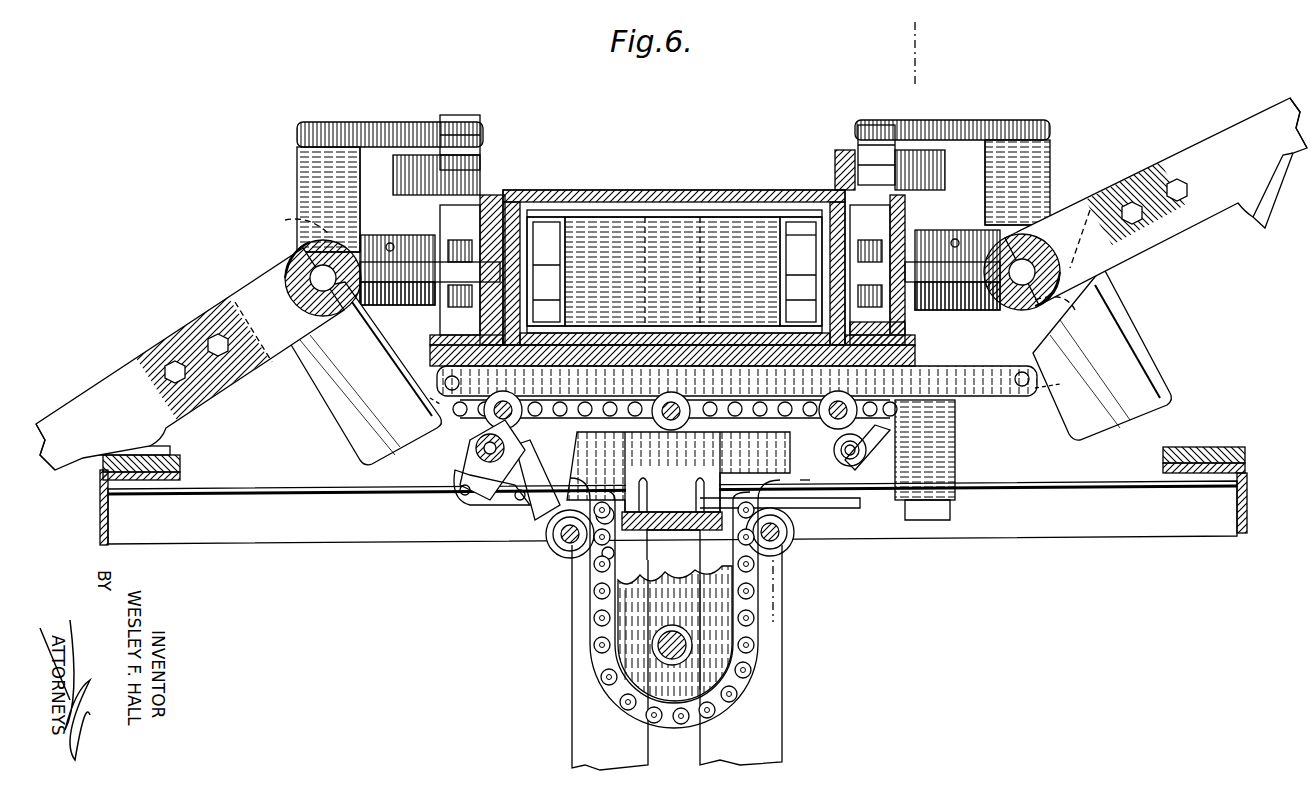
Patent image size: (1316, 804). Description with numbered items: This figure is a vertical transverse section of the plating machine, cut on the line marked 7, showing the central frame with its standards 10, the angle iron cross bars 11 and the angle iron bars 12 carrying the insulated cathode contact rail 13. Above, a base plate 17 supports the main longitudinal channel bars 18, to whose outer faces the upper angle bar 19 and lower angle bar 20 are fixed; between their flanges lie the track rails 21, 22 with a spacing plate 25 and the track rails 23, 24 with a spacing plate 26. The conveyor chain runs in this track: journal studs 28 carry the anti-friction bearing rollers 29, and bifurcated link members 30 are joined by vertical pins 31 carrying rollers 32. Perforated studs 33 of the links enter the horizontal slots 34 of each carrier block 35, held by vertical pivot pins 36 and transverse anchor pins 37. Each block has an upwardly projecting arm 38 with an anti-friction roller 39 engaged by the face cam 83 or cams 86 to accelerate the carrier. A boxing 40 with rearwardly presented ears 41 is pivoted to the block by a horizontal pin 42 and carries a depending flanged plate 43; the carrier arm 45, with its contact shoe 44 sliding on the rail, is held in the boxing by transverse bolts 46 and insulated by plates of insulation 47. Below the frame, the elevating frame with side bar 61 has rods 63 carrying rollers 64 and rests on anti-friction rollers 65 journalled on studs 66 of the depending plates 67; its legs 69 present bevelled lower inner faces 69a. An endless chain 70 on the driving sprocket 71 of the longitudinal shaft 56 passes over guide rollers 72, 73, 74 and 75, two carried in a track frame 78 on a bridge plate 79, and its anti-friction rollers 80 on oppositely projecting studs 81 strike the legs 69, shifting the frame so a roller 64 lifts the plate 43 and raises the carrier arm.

The section line 6—6 / Figure 7 reference 7 is at (911, 49).
The standards 10 is at (768, 714).
The angle iron cross bars 11 is at (290, 543).
The angle iron bars 12 is at (100, 494).
The cathode contact rail 13 is at (182, 463).
The base plate 17 is at (655, 356).
The main longitudinal channel bars 18 is at (600, 274).
The upper angle bar 19 is at (545, 200).
The lower angle bar 20 is at (437, 375).
The track rail 21 is at (801, 229).
The track rail 22 is at (895, 232).
The track rail 23 is at (770, 323).
The track rail 24 is at (905, 333).
The spacing plate 25 is at (880, 205).
The spacing plate 26 is at (915, 340).
The journal studs 28 is at (465, 322).
The anti-friction bearing rollers 29 is at (674, 271).
The bifurcated link members 30 is at (610, 230).
The vertical pins 31 is at (673, 282).
The anti-friction rollers 32 is at (673, 309).
The perforated studs 33 is at (680, 273).
The horizontal slots 34 is at (675, 295).
The carrier block 35 is at (292, 253).
The vertical pivot pins 36 is at (380, 330).
The transverse anchor pins 37 is at (386, 246).
The upwardly projecting arm 38 is at (392, 128).
The anti-friction roller 39 is at (482, 160).
The boxing 40 is at (190, 330).
The rearwardly presented ears 41 is at (285, 268).
The horizontal pin 42 is at (300, 230).
The flanged plate 43 is at (318, 432).
The contact shoe 44 is at (160, 440).
The carrier arm 45 is at (48, 418).
The transverse bolts 46 is at (185, 380).
The plates of insulation 47 is at (262, 370).
The longitudinal shaft 56 is at (676, 630).
The side bar 61 is at (740, 400).
The rods 63 is at (442, 383).
The rollers 64 is at (742, 397).
The anti-friction rollers 65 is at (503, 400).
The studs 66 is at (460, 440).
The depending plates 67 is at (520, 520).
The legs 69 is at (957, 430).
The bevelled lower inner faces 69a is at (918, 522).
The endless chain 70 is at (595, 618).
The driving sprocket 71 is at (620, 658).
The guide roller 72 is at (795, 550).
The guide roller 73 is at (838, 515).
The guide roller 74 is at (490, 500).
The guide roller 75 is at (560, 550).
The track frame 78 is at (560, 495).
The bridge plate 79 is at (668, 512).
The anti-friction rollers 80 is at (605, 505).
The oppositely projecting studs 81 is at (866, 450).
The face cam 83 is at (840, 160).
The cams 86 is at (505, 175).